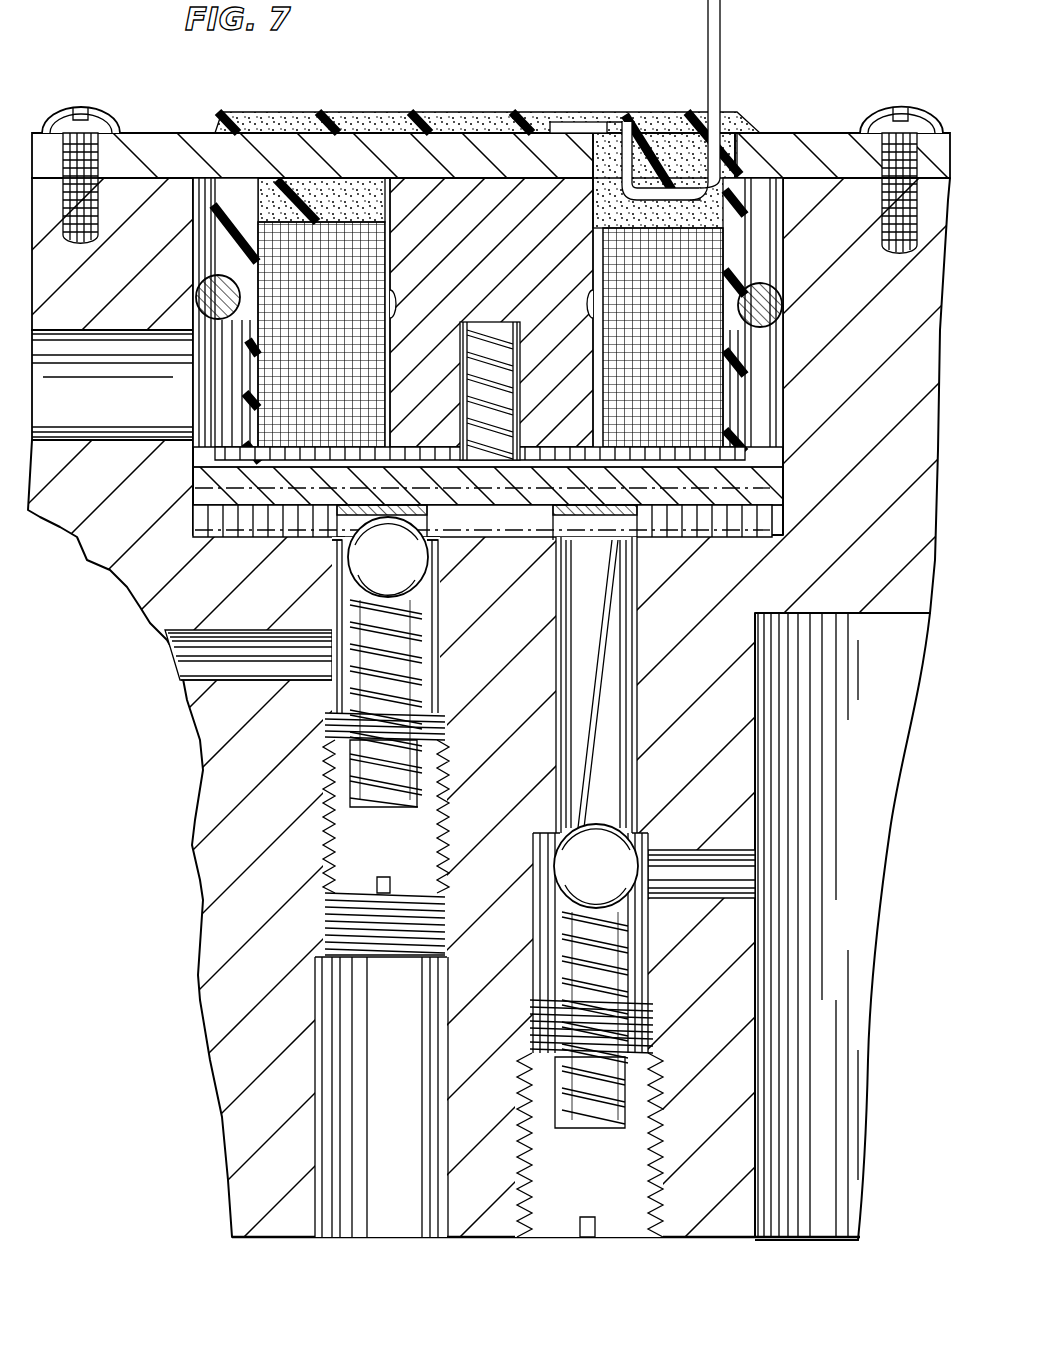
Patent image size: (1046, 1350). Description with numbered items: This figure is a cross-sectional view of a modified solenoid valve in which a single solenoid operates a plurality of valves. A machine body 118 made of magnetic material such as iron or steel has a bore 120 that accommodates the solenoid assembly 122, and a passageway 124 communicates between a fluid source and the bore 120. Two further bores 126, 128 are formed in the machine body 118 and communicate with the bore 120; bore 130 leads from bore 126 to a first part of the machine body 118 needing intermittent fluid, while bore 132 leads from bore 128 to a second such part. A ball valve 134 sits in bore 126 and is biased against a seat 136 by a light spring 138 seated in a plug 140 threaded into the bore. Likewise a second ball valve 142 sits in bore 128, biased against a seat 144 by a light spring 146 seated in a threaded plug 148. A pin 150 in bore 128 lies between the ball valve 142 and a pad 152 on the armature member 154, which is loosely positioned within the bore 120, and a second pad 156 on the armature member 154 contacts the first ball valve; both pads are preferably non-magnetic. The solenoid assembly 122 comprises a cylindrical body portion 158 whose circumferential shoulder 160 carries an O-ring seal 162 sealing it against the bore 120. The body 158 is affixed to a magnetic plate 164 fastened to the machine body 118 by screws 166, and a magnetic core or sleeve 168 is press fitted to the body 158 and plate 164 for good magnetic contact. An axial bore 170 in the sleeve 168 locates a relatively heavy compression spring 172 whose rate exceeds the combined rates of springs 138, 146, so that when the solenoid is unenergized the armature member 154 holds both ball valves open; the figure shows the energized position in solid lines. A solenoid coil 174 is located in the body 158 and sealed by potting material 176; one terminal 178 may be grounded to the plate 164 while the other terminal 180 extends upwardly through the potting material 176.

The machine body 118 is at (127, 586).
The bore 120 is at (200, 322).
The solenoid assembly 122 is at (521, 98).
The passageway 124 is at (133, 438).
The bore 126 is at (427, 877).
The bore 128 is at (593, 685).
The bore 130 is at (220, 640).
The bore 132 is at (748, 860).
The ball valve 134 is at (430, 560).
The seat 136 is at (430, 560).
The light spring 138 is at (415, 660).
The plug 140 is at (443, 830).
The second ball valve 142 is at (617, 1006).
The seat 144 is at (600, 833).
The light spring 146 is at (627, 963).
The plug 148 is at (655, 1098).
The pin 150 is at (603, 630).
The pad 152 is at (633, 517).
The armature member 154 is at (718, 513).
The second pad 156 is at (335, 537).
The cylindrical body portion 158 is at (247, 188).
The circumferential shoulder 160 is at (200, 268).
The O-ring seal 162 is at (200, 298).
The plate 164 is at (810, 143).
The screws 166 is at (102, 113).
The core or sleeve 168 is at (442, 200).
The axial bore 170 is at (518, 391).
The compression spring 172 is at (515, 434).
The solenoid coil 174 is at (330, 237).
The potting material 176 is at (665, 157).
The terminal 178 is at (582, 123).
The terminal 180 is at (722, 46).